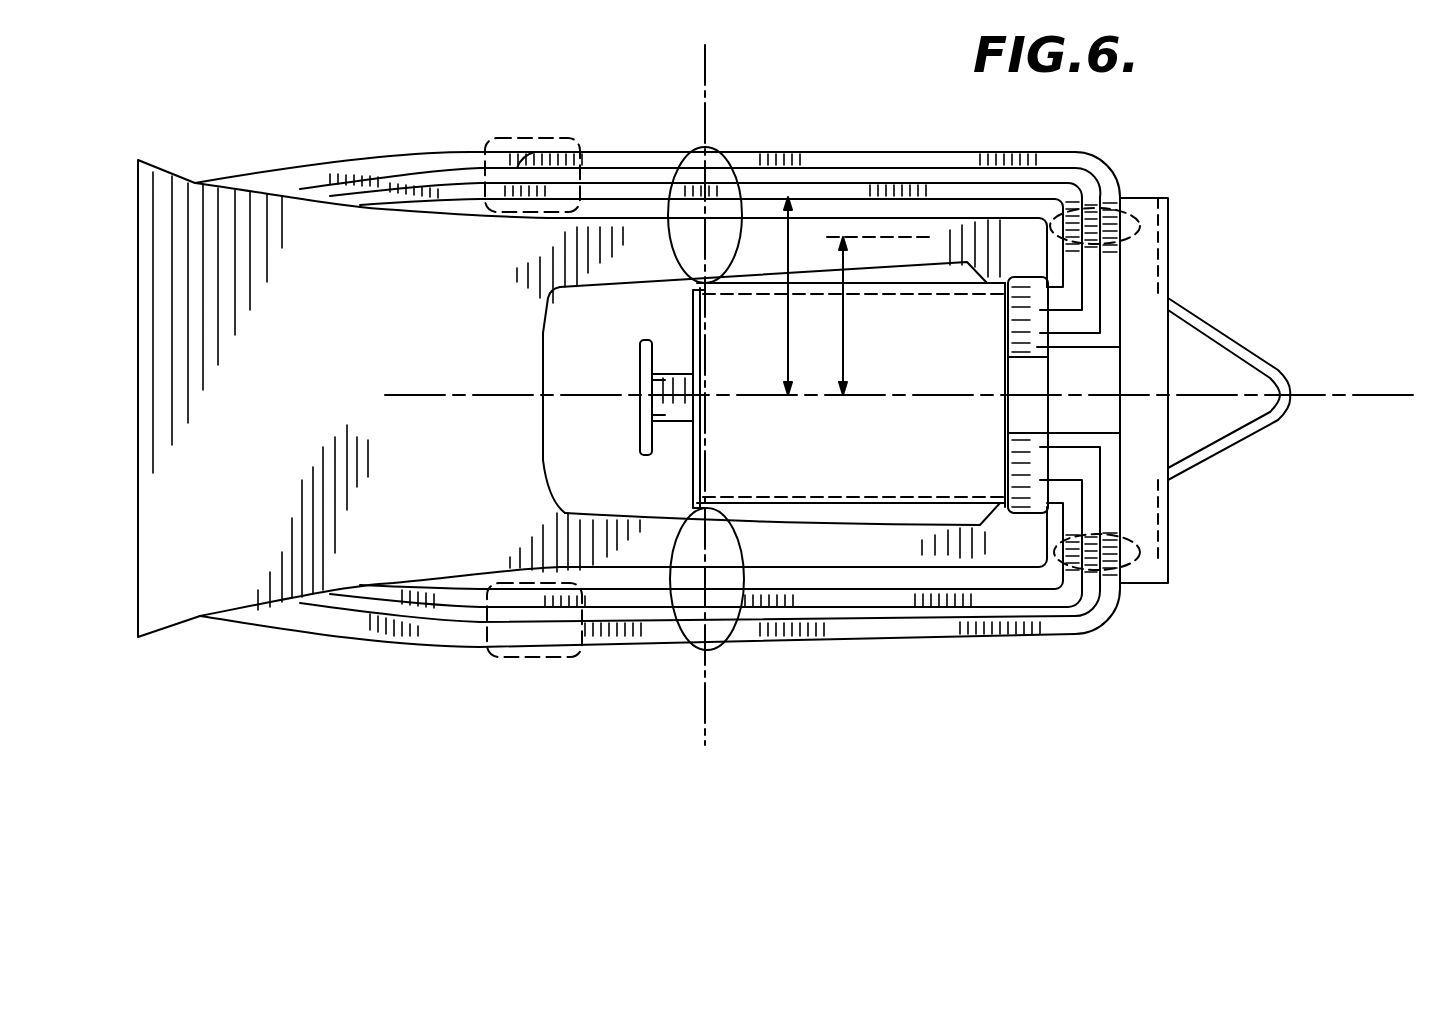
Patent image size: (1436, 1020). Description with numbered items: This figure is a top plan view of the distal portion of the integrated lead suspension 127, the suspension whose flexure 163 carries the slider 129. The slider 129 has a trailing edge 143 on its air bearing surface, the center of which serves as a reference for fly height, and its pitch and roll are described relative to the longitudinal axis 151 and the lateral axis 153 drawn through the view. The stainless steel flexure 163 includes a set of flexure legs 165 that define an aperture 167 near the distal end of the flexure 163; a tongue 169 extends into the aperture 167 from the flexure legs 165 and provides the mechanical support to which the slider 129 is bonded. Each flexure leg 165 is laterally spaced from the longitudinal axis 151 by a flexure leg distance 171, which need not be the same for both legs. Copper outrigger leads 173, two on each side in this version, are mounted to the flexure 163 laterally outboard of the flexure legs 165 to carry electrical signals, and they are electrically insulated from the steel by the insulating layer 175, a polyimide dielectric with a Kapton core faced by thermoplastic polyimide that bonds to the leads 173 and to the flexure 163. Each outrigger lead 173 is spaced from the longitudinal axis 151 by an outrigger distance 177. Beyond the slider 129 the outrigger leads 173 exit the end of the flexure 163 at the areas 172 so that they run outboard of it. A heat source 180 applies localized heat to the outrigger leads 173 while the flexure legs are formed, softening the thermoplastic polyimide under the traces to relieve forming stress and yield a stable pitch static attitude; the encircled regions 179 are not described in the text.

The integrated lead suspension 127 is at (1185, 680).
The slider 129 is at (813, 497).
The trailing edge 143 is at (1020, 399).
The longitudinal axis 151 is at (1305, 390).
The lateral axis 153 is at (705, 100).
The flexure 163 is at (172, 595).
The flexure legs 165 is at (887, 230).
The aperture 167 is at (587, 290).
The tongue 169 is at (692, 438).
The flexure leg distance 171 is at (850, 345).
The areas 172 is at (1128, 223).
The outrigger leads 173 is at (1080, 150).
The insulating layer 175 is at (243, 183).
The outrigger distance 177 is at (783, 327).
The flow region 179 is at (707, 148).
The heat source 180 is at (548, 138).